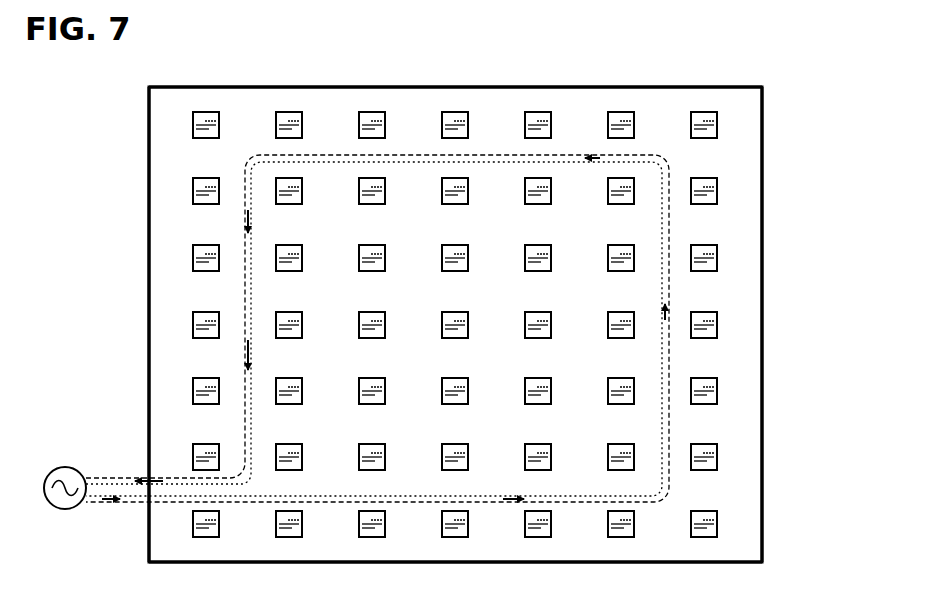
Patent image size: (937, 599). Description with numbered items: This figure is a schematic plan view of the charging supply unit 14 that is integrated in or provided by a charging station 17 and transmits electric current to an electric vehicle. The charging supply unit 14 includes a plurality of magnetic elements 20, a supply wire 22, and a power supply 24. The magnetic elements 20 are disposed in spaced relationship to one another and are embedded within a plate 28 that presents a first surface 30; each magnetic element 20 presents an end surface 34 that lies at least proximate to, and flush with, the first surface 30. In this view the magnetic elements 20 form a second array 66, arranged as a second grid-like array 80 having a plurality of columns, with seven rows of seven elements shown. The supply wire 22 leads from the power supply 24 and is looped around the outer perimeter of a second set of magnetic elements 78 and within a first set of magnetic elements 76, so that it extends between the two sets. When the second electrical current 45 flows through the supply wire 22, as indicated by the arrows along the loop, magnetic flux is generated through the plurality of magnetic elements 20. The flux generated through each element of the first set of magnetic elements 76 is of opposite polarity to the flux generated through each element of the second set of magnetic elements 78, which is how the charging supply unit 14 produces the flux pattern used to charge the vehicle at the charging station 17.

The charging supply unit 14 is at (765, 89).
The charging station 17 is at (482, 544).
The magnetic elements 20 is at (290, 538).
The supply wire 22 is at (245, 300).
The power supply 24 is at (63, 467).
The plate 28 is at (195, 95).
The first surface 30 is at (315, 86).
The end surface 34 is at (195, 184).
The second electrical current 45 is at (246, 360).
The second array 66 is at (132, 402).
The first set of magnetic elements 76 is at (522, 108).
The second set of magnetic elements 78 is at (434, 184).
The second grid-like array 80 is at (769, 311).